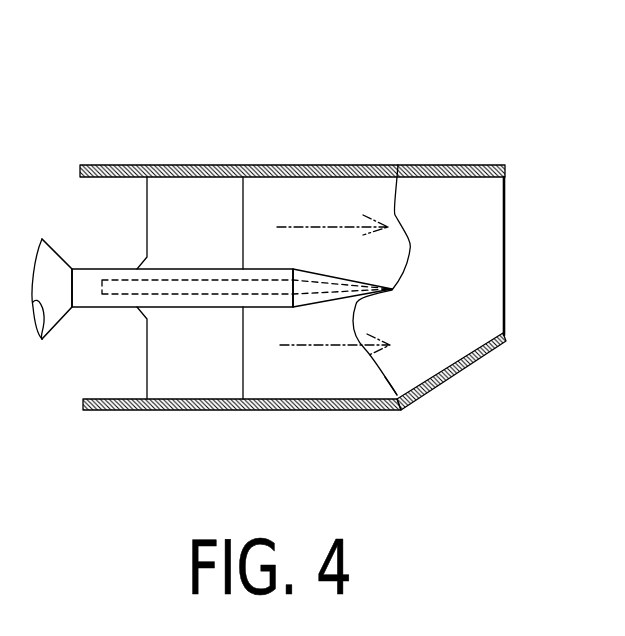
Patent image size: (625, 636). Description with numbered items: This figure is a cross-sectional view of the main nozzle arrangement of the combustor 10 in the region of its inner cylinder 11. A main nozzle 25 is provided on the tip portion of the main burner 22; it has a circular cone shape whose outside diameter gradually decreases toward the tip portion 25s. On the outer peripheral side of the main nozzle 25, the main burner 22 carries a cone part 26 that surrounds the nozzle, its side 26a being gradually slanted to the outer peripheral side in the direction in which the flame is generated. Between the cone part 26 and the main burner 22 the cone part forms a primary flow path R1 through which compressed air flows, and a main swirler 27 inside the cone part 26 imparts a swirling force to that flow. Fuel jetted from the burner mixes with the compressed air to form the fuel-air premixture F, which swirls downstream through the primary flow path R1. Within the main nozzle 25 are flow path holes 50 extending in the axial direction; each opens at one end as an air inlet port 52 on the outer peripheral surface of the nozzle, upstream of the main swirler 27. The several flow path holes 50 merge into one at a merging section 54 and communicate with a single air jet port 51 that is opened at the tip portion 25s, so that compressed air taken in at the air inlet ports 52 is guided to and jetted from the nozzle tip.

The combustor 10 is at (300, 130).
The combustor casing 11 is at (292, 171).
The main burner 22 is at (42, 237).
The main nozzle 25 is at (272, 267).
The tip portion 25s is at (398, 163).
The cone part 26 is at (442, 163).
The side 26a is at (465, 365).
The main swirler 27 is at (147, 207).
The flow path hole 50 is at (212, 450).
The air jet port 51 is at (392, 288).
The air inlet port 52 is at (100, 278).
The merging section 54 is at (397, 393).
The fuel-air premixture F is at (340, 222).
The primary flow path R1 is at (110, 360).